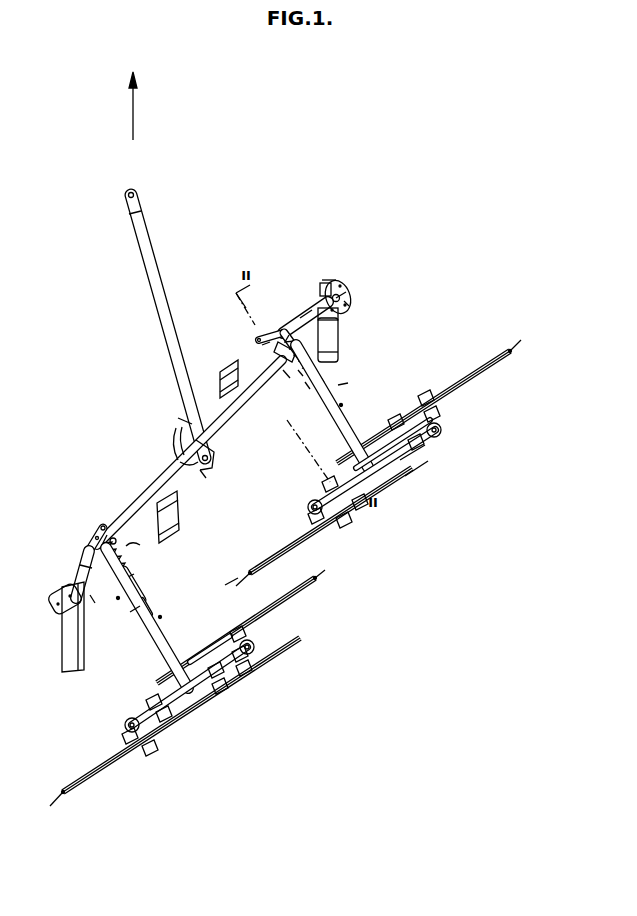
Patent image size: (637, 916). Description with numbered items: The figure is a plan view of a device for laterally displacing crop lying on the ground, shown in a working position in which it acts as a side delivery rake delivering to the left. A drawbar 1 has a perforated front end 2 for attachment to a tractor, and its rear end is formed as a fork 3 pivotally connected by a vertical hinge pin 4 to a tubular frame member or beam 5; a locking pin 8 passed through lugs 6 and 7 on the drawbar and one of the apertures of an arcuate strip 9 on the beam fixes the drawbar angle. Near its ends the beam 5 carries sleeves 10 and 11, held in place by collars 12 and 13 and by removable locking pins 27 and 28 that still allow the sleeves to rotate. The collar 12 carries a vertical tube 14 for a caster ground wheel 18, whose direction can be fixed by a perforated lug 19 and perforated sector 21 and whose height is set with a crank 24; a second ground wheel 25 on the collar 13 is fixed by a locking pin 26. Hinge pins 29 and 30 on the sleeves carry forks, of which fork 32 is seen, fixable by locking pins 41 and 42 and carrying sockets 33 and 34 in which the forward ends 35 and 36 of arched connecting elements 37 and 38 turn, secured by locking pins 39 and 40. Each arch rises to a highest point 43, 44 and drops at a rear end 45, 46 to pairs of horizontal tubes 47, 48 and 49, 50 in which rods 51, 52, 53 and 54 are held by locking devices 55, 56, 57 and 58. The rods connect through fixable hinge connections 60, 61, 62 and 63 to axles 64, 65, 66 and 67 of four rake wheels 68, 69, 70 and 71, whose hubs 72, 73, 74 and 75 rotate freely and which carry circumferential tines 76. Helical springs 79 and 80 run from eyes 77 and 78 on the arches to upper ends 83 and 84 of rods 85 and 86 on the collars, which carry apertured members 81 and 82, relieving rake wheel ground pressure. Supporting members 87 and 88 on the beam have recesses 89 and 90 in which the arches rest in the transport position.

The drawbar 1 is at (164, 300).
The front end 2 is at (139, 210).
The fork 3 is at (212, 452).
The vertical hinge pin 4 is at (208, 464).
The frame member or beam 5 is at (228, 422).
The lug 6 is at (172, 443).
The lug 7 is at (178, 428).
The locking pin 8 is at (178, 420).
The arcuate strip 9 is at (180, 462).
The sleeve 10 is at (280, 350).
The sleeve 11 is at (114, 538).
The collar 12 is at (338, 325).
The collar 13 is at (93, 602).
The vertical tube 14 is at (325, 282).
The ground wheel 18 is at (338, 357).
The perforated lug 19 is at (350, 293).
The perforated sector 21 is at (342, 284).
The crank 24 is at (349, 304).
The ground wheel 25 is at (82, 664).
The locking pin 26 is at (50, 612).
The removable locking pin 27 is at (284, 376).
The removable locking pin 28 is at (140, 545).
The hinge pin 29 is at (292, 322).
The hinge pin 30 is at (104, 526).
The fork 32 is at (126, 565).
The socket 33 is at (320, 370).
The socket 34 is at (140, 586).
The forward end 35 is at (312, 398).
The forward end 36 is at (133, 612).
The connecting element 37 is at (354, 430).
The connecting element 38 is at (168, 658).
The locking pin 39 is at (340, 389).
The locking pin 40 is at (146, 604).
The locking pin 41 is at (300, 374).
The locking pin 42 is at (136, 577).
The highest point 43 is at (383, 442).
The highest point 44 is at (204, 655).
The rear end 45 is at (376, 482).
The rear end 46 is at (194, 706).
The tube 47 is at (395, 420).
The tube 48 is at (416, 474).
The tube 49 is at (216, 670).
The tube 50 is at (224, 682).
The rod 51 is at (424, 458).
The rod 52 is at (326, 487).
The rod 53 is at (240, 660).
The rod 54 is at (148, 704).
The locking device 55 is at (411, 439).
The locking device 56 is at (360, 506).
The locking device 57 is at (242, 675).
The locking device 58 is at (164, 716).
The fixable hinge connection 60 is at (443, 433).
The fixable hinge connection 61 is at (308, 505).
The fixable hinge connection 62 is at (255, 647).
The fixable hinge connection 63 is at (125, 726).
The axle 64 is at (436, 414).
The axle 65 is at (310, 516).
The axle 66 is at (244, 636).
The axle 67 is at (124, 740).
The rake wheel 68 is at (478, 372).
The rake wheel 69 is at (400, 480).
The rake wheel 70 is at (300, 590).
The rake wheel 71 is at (215, 692).
The hub 72 is at (426, 397).
The hub 73 is at (342, 527).
The hub 74 is at (230, 582).
The hub 75 is at (150, 752).
The tines or teeth 76 is at (516, 343).
The eye 77 is at (343, 405).
The eye 78 is at (162, 618).
The helical spring 79 is at (306, 388).
The helical spring 80 is at (117, 601).
The apertured member 81 is at (256, 338).
The apertured member 82 is at (98, 530).
The upper end 83 is at (258, 343).
The upper end 84 is at (84, 548).
The rod 85 is at (300, 316).
The rod 86 is at (82, 570).
The supporting member 87 is at (226, 377).
The supporting member 88 is at (176, 530).
The recess 89 is at (226, 392).
The recess 90 is at (178, 514).